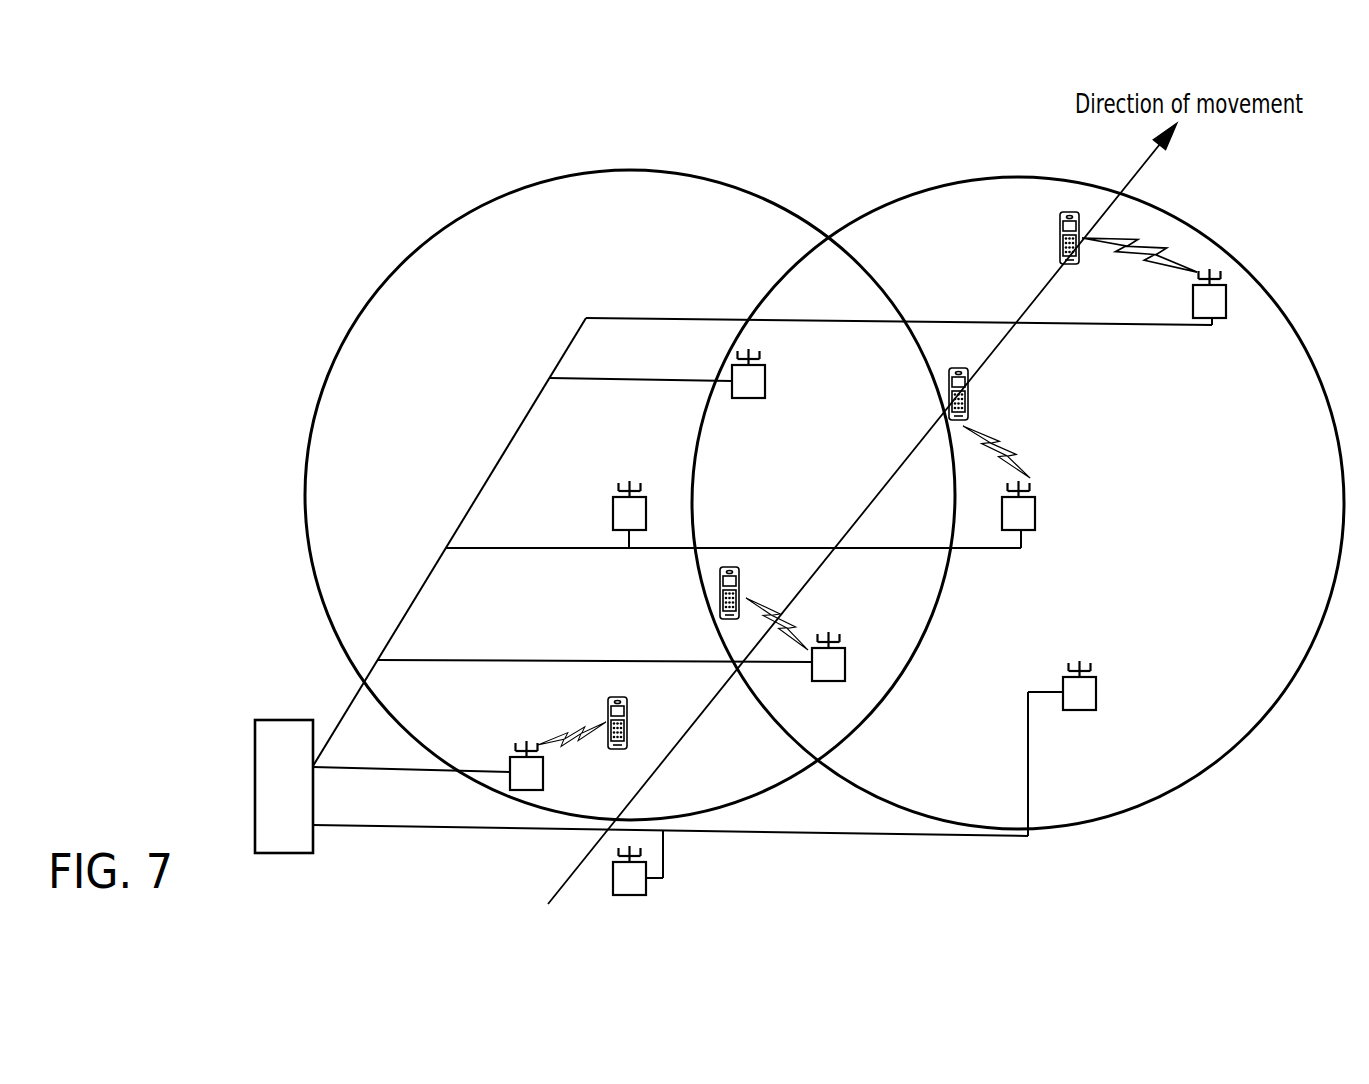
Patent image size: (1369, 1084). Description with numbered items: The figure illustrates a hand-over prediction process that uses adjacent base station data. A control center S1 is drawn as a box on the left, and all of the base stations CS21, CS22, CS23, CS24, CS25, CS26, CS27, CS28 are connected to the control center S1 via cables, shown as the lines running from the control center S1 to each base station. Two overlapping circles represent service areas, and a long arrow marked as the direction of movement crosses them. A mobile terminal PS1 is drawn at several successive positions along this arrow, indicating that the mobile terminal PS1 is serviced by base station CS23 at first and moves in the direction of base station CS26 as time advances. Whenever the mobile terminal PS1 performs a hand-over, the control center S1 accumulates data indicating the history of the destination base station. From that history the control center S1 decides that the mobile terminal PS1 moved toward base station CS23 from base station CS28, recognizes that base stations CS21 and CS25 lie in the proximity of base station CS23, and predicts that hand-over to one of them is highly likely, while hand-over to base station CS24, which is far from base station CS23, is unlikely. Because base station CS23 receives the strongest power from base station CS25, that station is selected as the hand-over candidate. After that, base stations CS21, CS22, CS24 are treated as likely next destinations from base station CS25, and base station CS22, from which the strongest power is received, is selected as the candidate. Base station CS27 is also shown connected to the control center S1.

The control center S1 is at (283, 720).
The base station CS21 is at (612, 513).
The base station CS22 is at (1036, 513).
The base station CS23 is at (543, 775).
The base station CS24 is at (765, 382).
The base station CS25 is at (828, 682).
The base station CS26 is at (1192, 300).
The base station CS27 is at (1079, 710).
The base station CS28 is at (648, 886).
The mobile terminal PS1 is at (1058, 240).